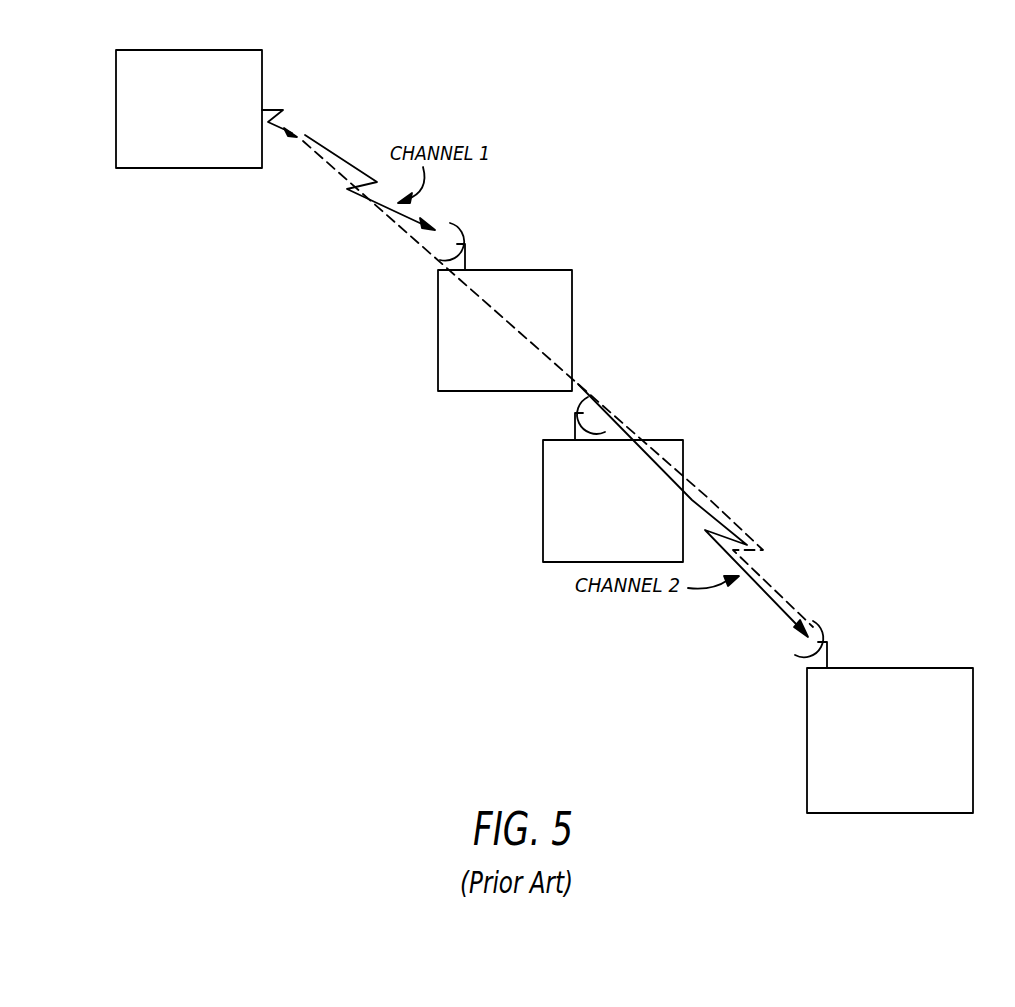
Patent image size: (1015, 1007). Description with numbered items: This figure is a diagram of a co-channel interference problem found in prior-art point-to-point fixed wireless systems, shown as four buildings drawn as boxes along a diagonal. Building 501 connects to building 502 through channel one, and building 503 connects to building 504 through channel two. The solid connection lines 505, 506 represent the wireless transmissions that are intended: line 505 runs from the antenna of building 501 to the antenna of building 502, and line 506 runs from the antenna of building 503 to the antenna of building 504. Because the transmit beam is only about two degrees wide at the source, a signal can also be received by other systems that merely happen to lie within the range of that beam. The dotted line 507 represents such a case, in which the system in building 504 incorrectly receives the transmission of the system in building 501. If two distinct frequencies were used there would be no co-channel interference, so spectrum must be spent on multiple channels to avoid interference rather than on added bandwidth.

The building 501 is at (188, 168).
The building 502 is at (438, 324).
The building 503 is at (543, 503).
The building 504 is at (807, 740).
The solid connection line 505 is at (393, 216).
The solid connection line 506 is at (772, 602).
The dotted line 507 is at (767, 583).